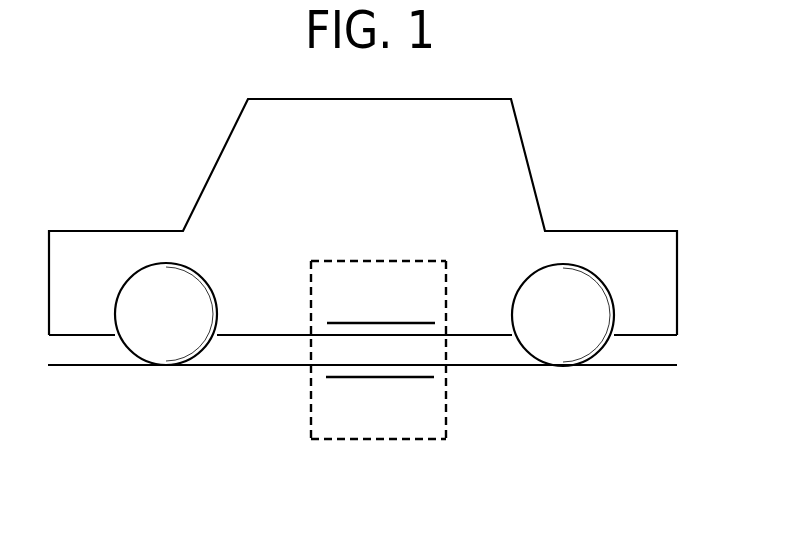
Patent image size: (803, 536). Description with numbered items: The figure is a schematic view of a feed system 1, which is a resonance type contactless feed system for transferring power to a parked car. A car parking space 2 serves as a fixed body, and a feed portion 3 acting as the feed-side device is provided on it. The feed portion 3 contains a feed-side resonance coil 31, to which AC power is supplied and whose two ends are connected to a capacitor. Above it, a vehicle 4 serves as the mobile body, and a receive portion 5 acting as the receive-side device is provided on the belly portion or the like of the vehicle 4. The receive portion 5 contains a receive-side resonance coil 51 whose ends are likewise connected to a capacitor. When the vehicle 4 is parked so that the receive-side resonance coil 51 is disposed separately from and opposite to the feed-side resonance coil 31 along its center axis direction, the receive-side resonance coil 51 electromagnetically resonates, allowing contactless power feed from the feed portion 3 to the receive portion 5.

The feed system 1 is at (628, 134).
The car parking space 2 is at (652, 364).
The feed portion 3 is at (448, 422).
The feed-side resonance coil 31 is at (334, 377).
The vehicle 4 is at (636, 231).
The receive portion 5 is at (447, 257).
The receive-side resonance coil 51 is at (330, 323).